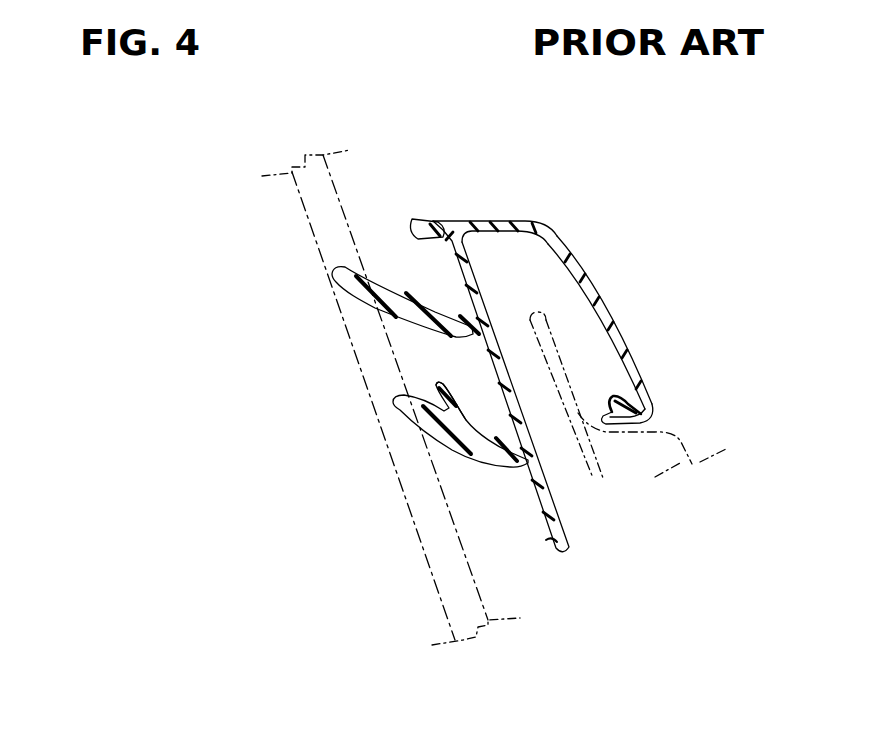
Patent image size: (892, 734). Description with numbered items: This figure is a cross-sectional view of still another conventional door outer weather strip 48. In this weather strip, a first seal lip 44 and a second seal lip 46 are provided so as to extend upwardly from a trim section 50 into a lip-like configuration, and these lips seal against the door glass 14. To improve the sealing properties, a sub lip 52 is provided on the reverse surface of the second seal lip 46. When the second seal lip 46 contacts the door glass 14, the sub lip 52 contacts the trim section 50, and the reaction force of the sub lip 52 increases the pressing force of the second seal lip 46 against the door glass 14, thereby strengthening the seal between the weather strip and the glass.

The door glass 14 is at (330, 310).
The first seal lip 44 is at (393, 299).
The second seal lip 46 is at (405, 400).
The door outer weather strip 48 is at (600, 252).
The trim section 50 is at (613, 320).
The sub lip 52 is at (434, 383).